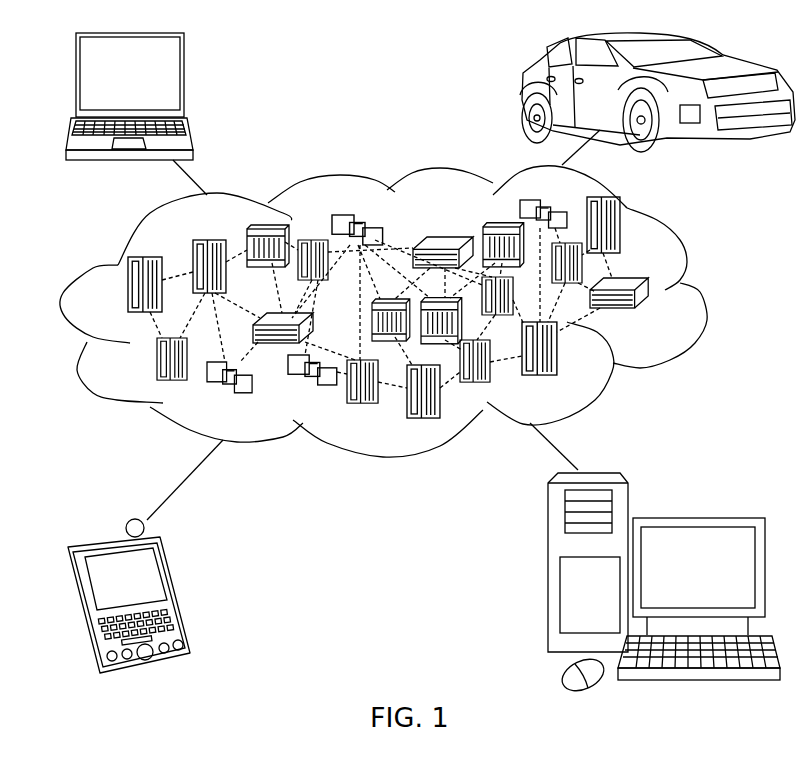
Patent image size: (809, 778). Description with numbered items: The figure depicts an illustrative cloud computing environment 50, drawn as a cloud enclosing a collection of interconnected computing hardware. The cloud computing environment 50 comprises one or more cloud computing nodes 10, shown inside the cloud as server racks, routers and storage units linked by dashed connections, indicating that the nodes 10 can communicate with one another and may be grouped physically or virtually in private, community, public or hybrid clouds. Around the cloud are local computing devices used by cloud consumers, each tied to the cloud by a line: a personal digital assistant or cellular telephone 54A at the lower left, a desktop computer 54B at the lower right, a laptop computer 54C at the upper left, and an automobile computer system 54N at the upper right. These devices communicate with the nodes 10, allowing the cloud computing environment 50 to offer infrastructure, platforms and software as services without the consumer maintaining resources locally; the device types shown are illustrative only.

The cloud computing nodes 10 is at (650, 318).
The cloud computing environment 50 is at (700, 293).
The personal digital assistant or cellular telephone 54A is at (177, 590).
The desktop computer 54B is at (697, 517).
The laptop computer 54C is at (186, 82).
The automobile computer system 54N is at (523, 92).